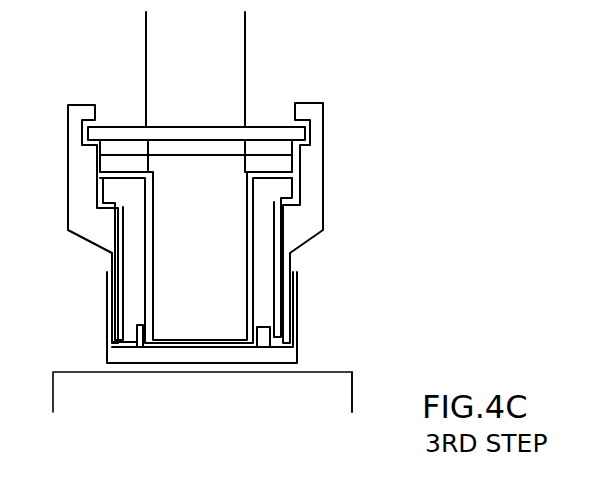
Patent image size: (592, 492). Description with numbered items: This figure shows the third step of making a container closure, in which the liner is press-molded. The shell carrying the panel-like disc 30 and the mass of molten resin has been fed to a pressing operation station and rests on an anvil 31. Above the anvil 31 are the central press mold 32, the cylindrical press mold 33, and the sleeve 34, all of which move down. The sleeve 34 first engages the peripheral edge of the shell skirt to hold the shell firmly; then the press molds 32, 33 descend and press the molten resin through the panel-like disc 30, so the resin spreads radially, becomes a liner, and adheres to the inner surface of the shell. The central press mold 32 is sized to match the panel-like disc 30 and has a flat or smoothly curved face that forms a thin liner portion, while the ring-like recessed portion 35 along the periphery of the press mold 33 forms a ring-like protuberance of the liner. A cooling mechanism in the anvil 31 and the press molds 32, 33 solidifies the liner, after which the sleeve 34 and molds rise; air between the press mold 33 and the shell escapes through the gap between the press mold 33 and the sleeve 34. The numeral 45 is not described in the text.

The panel-like disc 30 is at (200, 363).
The anvil 31 is at (322, 390).
The central press mold 32 is at (212, 270).
The press mold of cylindrical form 33 is at (270, 228).
The sleeve 34 is at (313, 158).
The ring-like recessed portion 35 is at (272, 333).
The unknown element (cut off) 45 is at (579, 17).